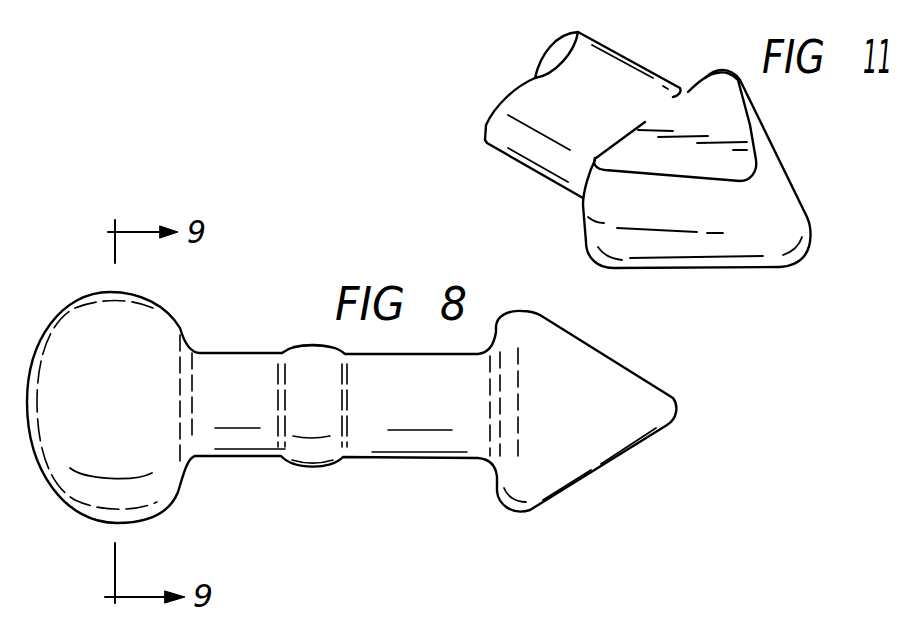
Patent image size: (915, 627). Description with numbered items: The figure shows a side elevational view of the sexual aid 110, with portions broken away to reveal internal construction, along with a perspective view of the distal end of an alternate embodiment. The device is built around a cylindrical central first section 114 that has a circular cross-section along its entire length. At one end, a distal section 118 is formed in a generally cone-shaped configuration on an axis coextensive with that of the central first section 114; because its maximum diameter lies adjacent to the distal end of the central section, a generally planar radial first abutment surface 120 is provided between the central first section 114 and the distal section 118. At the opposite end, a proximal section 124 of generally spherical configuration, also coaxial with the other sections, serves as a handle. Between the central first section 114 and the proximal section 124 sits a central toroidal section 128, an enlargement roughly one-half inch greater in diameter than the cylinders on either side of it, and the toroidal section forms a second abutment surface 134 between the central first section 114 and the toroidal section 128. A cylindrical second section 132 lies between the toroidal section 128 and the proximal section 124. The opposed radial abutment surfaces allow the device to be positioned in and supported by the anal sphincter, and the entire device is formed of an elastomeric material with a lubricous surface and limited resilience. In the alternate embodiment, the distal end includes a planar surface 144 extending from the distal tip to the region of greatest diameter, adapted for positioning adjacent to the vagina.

In FIG. 8, the closure device 110 is at (281, 330).
In FIG. 8, the cylindrical central first section 114 is at (413, 458).
In FIG. 8, the distal section 118 is at (662, 430).
In FIG. 8, the first abutment surface 120 is at (492, 485).
In FIG. 8, the proximal section 124 is at (52, 496).
In FIG. 8, the central toroidal section 128 is at (300, 472).
In FIG. 8, the cylindrical second section 132 is at (237, 452).
In FIG. 8, the second abutment surface 134 is at (345, 458).
In FIG. 11, the planar surface 144 is at (726, 121).